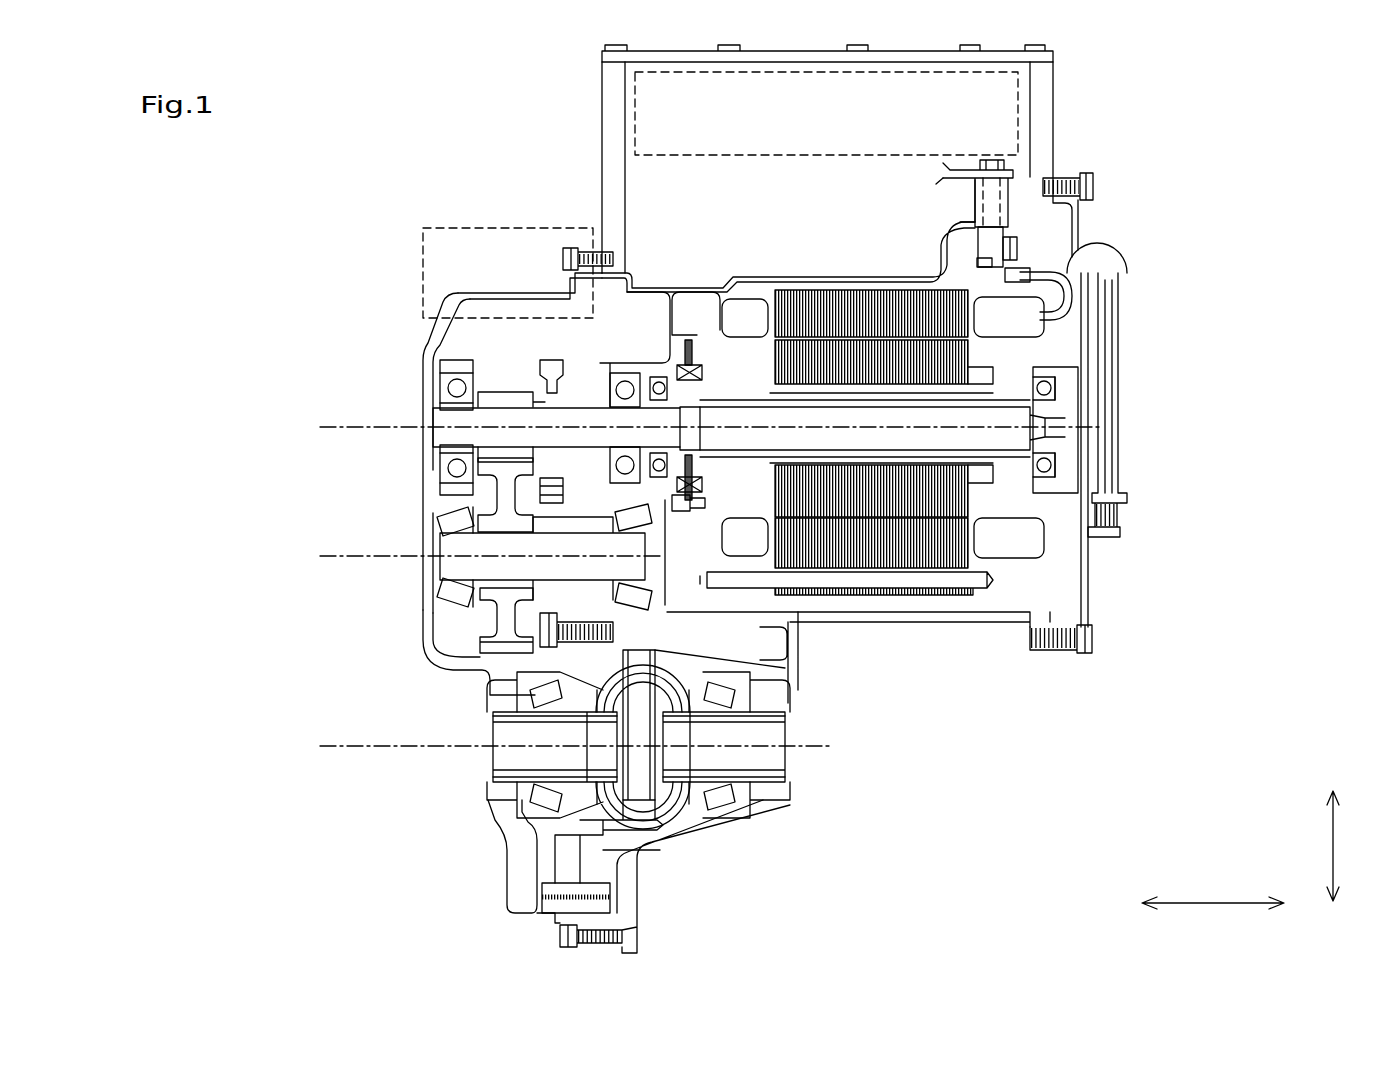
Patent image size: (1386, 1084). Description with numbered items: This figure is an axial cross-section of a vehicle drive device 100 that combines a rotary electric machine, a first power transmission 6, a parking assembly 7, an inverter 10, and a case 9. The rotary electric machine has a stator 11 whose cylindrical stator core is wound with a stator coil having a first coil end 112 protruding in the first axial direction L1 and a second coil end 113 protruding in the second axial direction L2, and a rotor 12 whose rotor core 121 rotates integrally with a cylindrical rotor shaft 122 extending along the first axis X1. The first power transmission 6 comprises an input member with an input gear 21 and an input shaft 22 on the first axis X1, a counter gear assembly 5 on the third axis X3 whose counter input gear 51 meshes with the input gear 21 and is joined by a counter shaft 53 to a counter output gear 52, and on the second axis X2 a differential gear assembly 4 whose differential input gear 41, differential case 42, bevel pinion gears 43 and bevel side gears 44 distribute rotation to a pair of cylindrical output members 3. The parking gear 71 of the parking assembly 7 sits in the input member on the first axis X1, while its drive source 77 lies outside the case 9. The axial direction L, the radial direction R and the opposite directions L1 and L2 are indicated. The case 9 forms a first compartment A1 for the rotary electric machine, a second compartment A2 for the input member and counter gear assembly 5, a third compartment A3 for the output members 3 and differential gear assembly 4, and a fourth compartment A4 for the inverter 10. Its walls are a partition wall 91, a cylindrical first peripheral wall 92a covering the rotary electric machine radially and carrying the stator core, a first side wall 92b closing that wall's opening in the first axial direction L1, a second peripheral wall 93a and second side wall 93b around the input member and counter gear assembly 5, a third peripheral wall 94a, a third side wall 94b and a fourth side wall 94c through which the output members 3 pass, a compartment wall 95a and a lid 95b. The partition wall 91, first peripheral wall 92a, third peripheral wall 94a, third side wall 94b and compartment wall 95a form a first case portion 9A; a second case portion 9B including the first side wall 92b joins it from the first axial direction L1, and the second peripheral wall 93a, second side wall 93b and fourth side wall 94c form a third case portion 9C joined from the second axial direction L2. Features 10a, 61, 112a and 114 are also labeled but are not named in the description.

The vehicle drive device 100 is at (382, 150).
The lid 95b is at (602, 57).
The compartment wall 95a is at (1040, 92).
The inverter 10 is at (635, 100).
The terminal 10a is at (1005, 165).
The parking assembly 7 is at (975, 183).
The first power transmission 6 is at (1034, 229).
The connecting portion 61 is at (985, 250).
The housing projection 112a is at (1072, 262).
The first side wall 92b is at (1112, 320).
The second case portion 9B is at (1156, 417).
The stator core 114 is at (855, 300).
The second coil end 113 is at (738, 310).
The rotor core 121 is at (970, 362).
The rotor shaft 122 is at (738, 397).
The rotor 12 is at (1012, 510).
The stator 11 is at (1015, 575).
The first coil end 112 is at (1017, 570).
The first peripheral wall 92a is at (905, 625).
The third side wall 94b is at (792, 630).
The first case portion 9A is at (918, 727).
The side gears 44 is at (680, 718).
The output members 3 is at (492, 775).
The differential gear assembly 4 is at (794, 889).
The differential case 42 is at (697, 810).
The pinion gears 43 is at (660, 682).
The differential input gear 41 is at (555, 903).
The third peripheral wall 94a is at (650, 882).
The fourth side wall 94c is at (505, 845).
The third compartment A3 is at (538, 872).
The counter input gear 51 is at (488, 652).
The counter gear assembly 5 is at (481, 616).
The third case portion 9C is at (413, 607).
The counter shaft 53 is at (455, 545).
The counter output gear 52 is at (590, 520).
The parking gear 71 is at (548, 497).
The input shaft 22 is at (448, 420).
The input gear 21 is at (505, 395).
The partition wall 91 is at (672, 348).
The second side wall 93b is at (433, 350).
The second peripheral wall 93a is at (460, 295).
The case 9 is at (445, 305).
The drive source 77 is at (423, 230).
The second compartment A2 is at (557, 332).
The first compartment A1 is at (702, 306).
The fourth compartment A4 is at (672, 205).
The first axis X1 is at (694, 428).
The second axis X2 is at (559, 746).
The third axis X3 is at (474, 557).
The radial direction R is at (1343, 846).
The axial direction L is at (1213, 891).
The first axial direction L1 is at (1303, 905).
The second axial direction L2 is at (1123, 905).